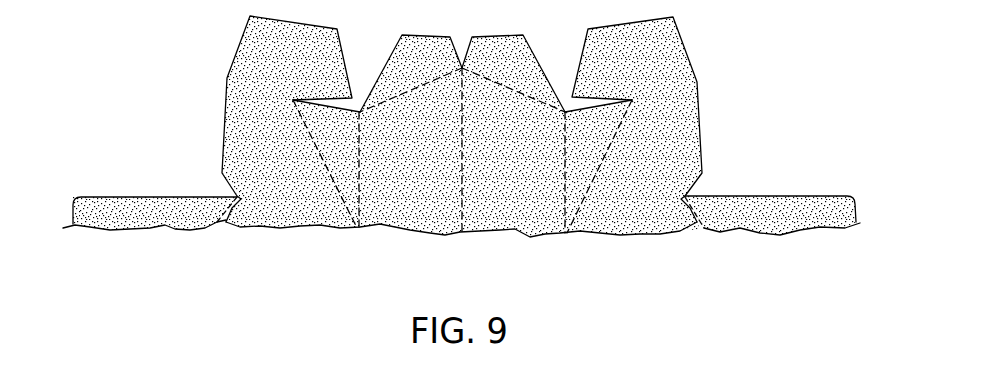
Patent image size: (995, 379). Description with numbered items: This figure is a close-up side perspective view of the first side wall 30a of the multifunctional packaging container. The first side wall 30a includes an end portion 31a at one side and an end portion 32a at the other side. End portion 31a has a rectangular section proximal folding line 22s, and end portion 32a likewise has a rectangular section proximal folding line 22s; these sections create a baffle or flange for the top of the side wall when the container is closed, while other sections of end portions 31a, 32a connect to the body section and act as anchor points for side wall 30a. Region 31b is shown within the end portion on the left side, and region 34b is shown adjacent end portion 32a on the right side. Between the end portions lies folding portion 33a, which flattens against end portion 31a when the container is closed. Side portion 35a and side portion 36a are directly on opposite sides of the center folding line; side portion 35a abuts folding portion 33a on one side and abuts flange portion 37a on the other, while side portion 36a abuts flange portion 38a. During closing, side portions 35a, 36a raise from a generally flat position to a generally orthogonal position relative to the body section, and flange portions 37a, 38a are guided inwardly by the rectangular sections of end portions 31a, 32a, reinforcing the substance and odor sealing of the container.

The first side wall 30a is at (782, 106).
The end portion 31a is at (143, 220).
The first side wall portion 31b is at (252, 145).
The end portion 32a is at (645, 151).
The folding portion 33a is at (322, 145).
The second intermediate wall portion 34b is at (573, 143).
The side portion 35a is at (408, 173).
The side portion 36a is at (482, 173).
The flange portion 37a is at (402, 68).
The flange portion 38a is at (488, 68).
The folding line 22s is at (228, 212).